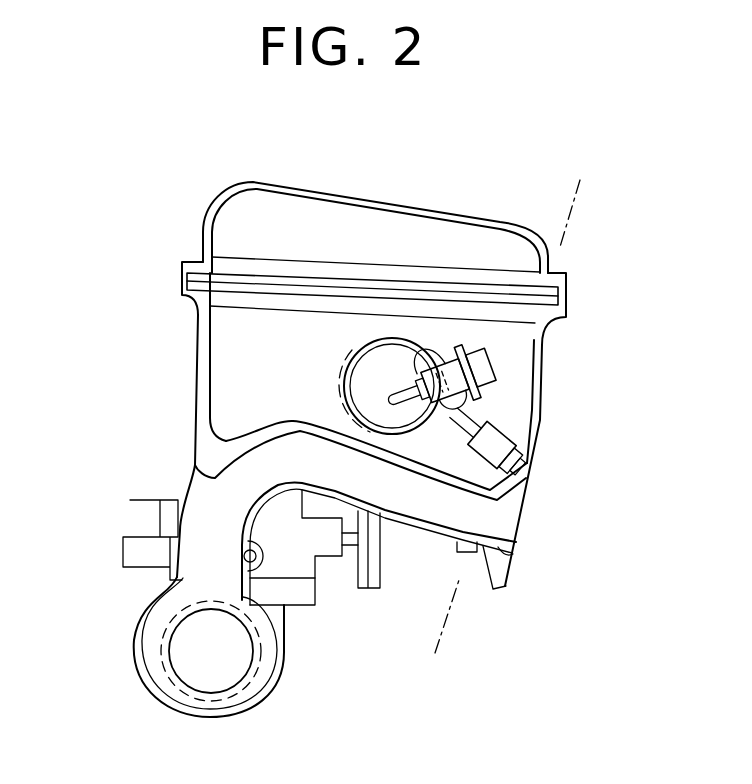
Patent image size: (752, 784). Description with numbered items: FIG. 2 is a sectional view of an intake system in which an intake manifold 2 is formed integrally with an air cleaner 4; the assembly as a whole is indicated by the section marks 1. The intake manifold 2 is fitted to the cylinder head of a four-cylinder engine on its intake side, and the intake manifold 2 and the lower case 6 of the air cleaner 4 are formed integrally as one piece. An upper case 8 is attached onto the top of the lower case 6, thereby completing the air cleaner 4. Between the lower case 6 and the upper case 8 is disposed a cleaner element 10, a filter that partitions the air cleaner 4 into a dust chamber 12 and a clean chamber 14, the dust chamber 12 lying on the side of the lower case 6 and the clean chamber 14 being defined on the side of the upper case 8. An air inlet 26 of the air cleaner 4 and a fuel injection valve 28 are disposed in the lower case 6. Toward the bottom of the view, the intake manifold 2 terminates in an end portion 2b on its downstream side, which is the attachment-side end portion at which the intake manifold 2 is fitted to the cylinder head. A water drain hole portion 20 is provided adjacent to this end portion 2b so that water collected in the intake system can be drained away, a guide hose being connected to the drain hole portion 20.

The fuel supply unit 1 is at (580, 180).
The intake manifold 2 is at (128, 623).
The end portion 2b is at (512, 557).
The air cleaner 4 is at (565, 268).
The lower case 6 is at (532, 438).
The upper case 8 is at (297, 187).
The cleaner element 10 is at (258, 282).
The dust chamber 12 is at (227, 342).
The clean chamber 14 is at (365, 218).
The drain hole portion 20 is at (465, 553).
The air inlet 26 is at (355, 385).
The fuel injection valve 28 is at (477, 422).